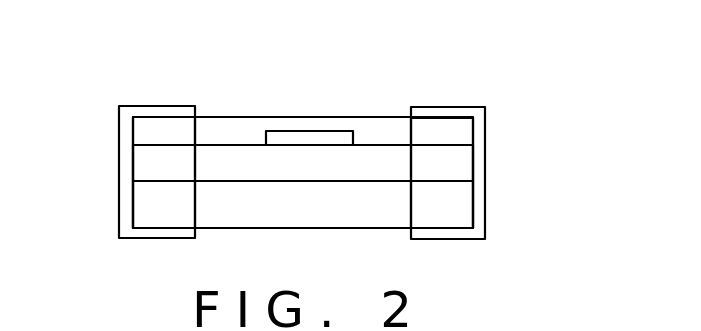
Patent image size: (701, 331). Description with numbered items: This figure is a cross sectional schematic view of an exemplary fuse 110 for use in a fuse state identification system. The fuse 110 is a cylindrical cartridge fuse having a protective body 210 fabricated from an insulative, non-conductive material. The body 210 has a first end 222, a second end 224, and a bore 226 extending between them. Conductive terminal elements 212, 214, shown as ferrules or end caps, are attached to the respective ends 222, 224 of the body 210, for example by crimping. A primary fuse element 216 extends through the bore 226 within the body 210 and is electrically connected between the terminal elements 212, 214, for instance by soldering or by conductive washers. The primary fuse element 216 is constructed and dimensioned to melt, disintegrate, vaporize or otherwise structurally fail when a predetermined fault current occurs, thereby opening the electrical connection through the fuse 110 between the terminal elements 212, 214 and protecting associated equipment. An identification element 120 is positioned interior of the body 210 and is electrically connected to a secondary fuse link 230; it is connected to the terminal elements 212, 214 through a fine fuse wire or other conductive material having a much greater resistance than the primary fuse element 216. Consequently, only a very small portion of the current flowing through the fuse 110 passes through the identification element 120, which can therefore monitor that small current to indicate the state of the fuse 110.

The fuse 110 is at (442, 70).
The identification element 120 is at (323, 131).
The protective body 210 is at (244, 228).
The terminal element 212 is at (485, 108).
The terminal element 214 is at (119, 107).
The primary fuse element 216 is at (372, 170).
The first end 222 is at (477, 163).
The second end 224 is at (133, 165).
The bore 226 is at (330, 207).
The secondary fuse link 230 is at (380, 145).